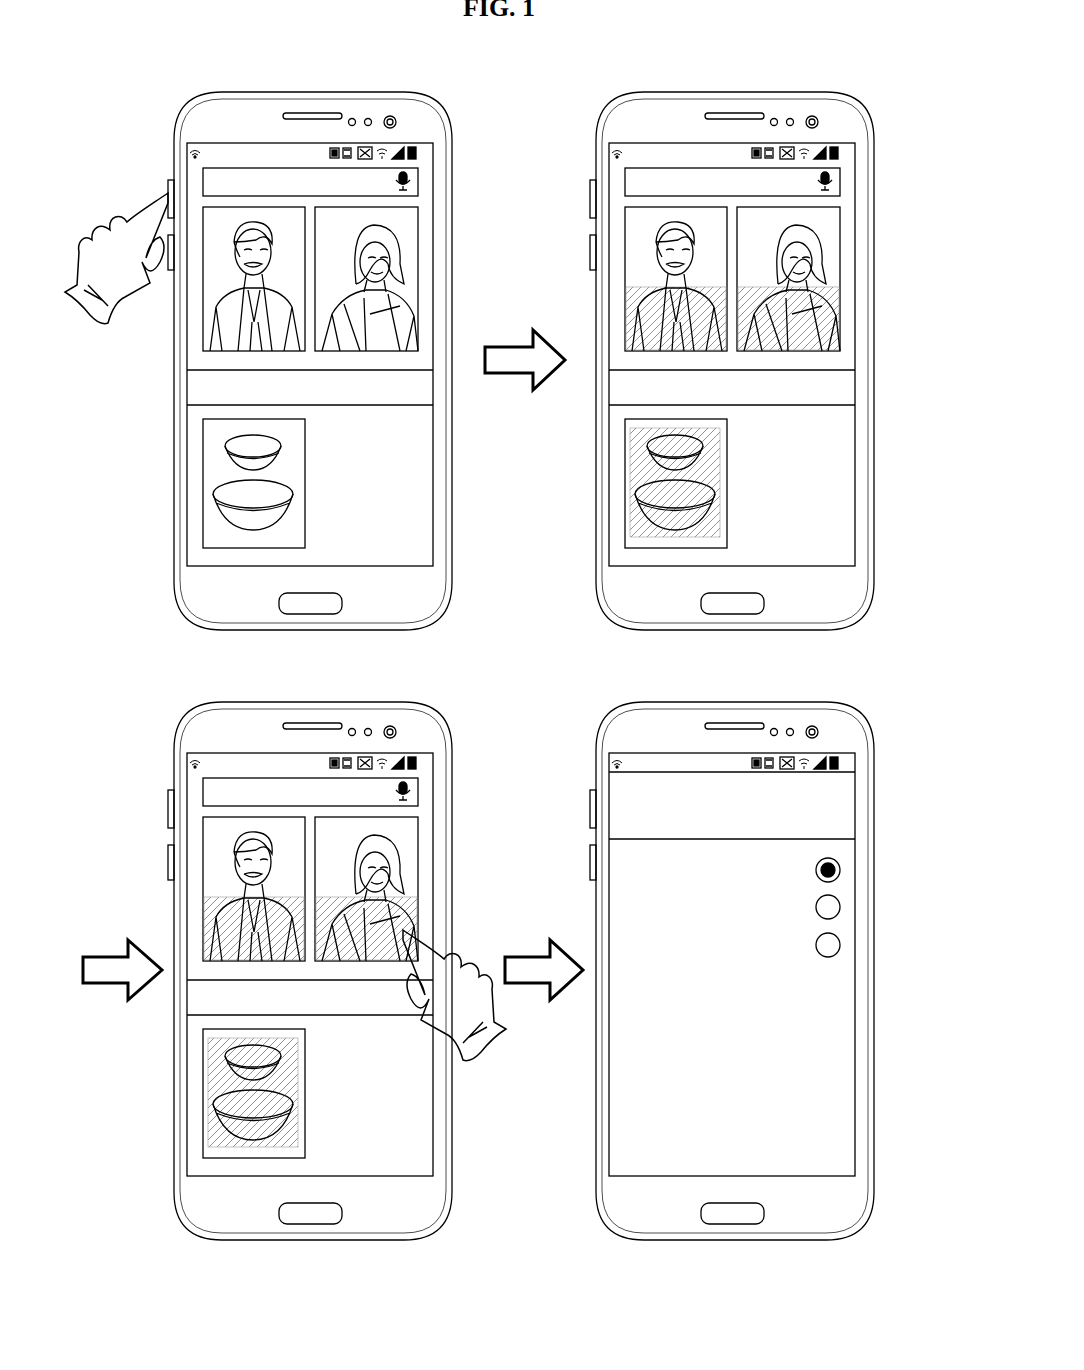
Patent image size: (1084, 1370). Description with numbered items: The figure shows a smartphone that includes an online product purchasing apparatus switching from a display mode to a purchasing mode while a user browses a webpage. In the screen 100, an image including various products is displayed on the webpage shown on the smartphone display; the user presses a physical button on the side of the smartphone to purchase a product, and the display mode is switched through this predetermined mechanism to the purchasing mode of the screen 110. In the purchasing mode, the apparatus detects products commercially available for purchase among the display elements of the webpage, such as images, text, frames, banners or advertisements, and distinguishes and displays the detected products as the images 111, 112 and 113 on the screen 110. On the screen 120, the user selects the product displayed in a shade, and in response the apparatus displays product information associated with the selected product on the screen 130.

The screen 100 is at (313, 92).
The screen 110 is at (735, 92).
The image 111 is at (628, 282).
The image 112 is at (835, 286).
The image 113 is at (626, 483).
The screen 120 is at (313, 702).
The screen 130 is at (735, 702).